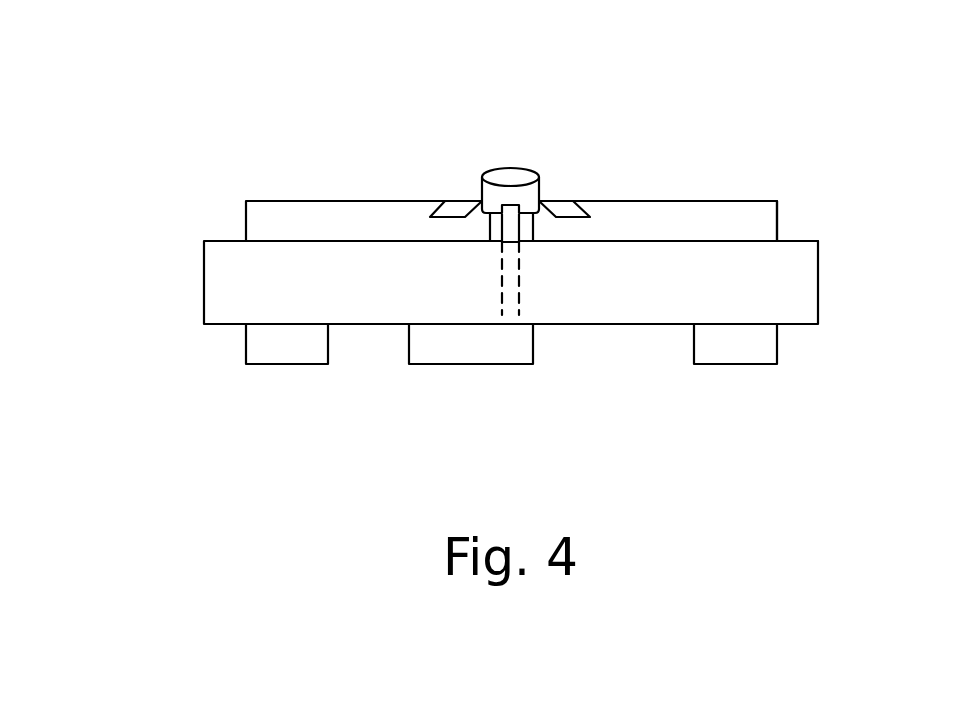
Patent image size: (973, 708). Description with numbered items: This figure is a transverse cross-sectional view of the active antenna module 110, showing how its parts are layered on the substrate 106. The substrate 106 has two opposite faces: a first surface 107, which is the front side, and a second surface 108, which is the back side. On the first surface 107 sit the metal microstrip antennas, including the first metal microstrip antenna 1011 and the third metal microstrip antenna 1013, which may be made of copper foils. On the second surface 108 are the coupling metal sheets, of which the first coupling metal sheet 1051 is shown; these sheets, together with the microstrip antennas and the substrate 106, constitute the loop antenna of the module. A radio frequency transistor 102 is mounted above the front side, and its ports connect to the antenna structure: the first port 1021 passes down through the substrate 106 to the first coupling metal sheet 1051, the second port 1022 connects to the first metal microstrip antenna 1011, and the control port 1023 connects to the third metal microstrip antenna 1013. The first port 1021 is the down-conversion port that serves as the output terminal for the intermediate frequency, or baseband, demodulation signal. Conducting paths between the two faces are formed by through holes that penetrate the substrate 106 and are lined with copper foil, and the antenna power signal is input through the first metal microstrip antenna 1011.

The light emitting device 110 is at (553, 47).
The radio frequency transistor 102 is at (515, 150).
The first metal microstrip antenna 1011 is at (318, 198).
The second port 1022 is at (455, 202).
The control port 1023 is at (563, 202).
The third metal microstrip antenna 1013 is at (752, 202).
The first surface 107 is at (798, 227).
The substrate 106 is at (818, 272).
The second surface 108 is at (795, 340).
The first port 1021 is at (510, 225).
The first coupling metal sheet 1051 is at (455, 350).